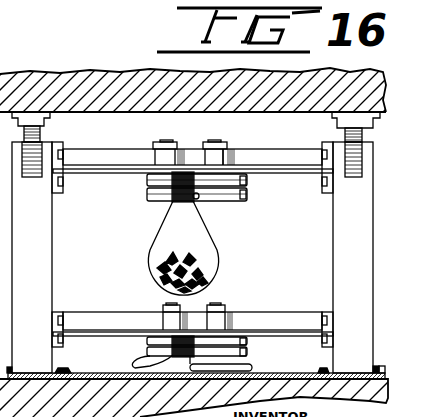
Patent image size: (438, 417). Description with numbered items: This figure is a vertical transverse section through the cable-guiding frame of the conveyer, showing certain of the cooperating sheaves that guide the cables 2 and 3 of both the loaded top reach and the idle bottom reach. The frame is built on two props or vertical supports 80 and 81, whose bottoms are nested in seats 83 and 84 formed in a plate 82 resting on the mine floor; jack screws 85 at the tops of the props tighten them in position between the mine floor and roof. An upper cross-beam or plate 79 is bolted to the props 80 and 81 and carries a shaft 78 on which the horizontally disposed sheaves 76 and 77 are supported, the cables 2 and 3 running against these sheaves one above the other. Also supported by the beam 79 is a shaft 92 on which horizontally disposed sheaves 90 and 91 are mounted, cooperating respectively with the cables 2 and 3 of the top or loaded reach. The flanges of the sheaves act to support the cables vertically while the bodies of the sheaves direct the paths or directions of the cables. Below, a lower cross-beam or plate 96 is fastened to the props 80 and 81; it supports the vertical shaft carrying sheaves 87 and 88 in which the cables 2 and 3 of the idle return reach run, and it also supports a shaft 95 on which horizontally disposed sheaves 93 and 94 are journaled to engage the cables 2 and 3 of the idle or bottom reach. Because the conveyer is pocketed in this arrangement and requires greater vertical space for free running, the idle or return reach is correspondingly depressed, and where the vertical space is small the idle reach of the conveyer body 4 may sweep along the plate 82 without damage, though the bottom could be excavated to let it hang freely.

The cable 2 is at (183, 180).
The cable 3 is at (198, 200).
The conveyer body 4 is at (217, 255).
The sheave 76 is at (148, 180).
The sheave 77 is at (148, 196).
The shaft 78 is at (162, 154).
The cross-beam 79 is at (124, 158).
The prop 80 is at (52, 266).
The prop 81 is at (333, 250).
The plate 82 is at (79, 378).
The seat 83 is at (33, 378).
The seat 84 is at (352, 378).
The jack screw 85 is at (42, 137).
The sheave 87 is at (148, 342).
The sheave 88 is at (148, 353).
The sheave 90 is at (247, 183).
The sheave 91 is at (240, 196).
The shaft 92 is at (228, 158).
The sheave 93 is at (247, 341).
The sheave 94 is at (247, 353).
The shaft 95 is at (220, 320).
The cross-beam 96 is at (88, 320).